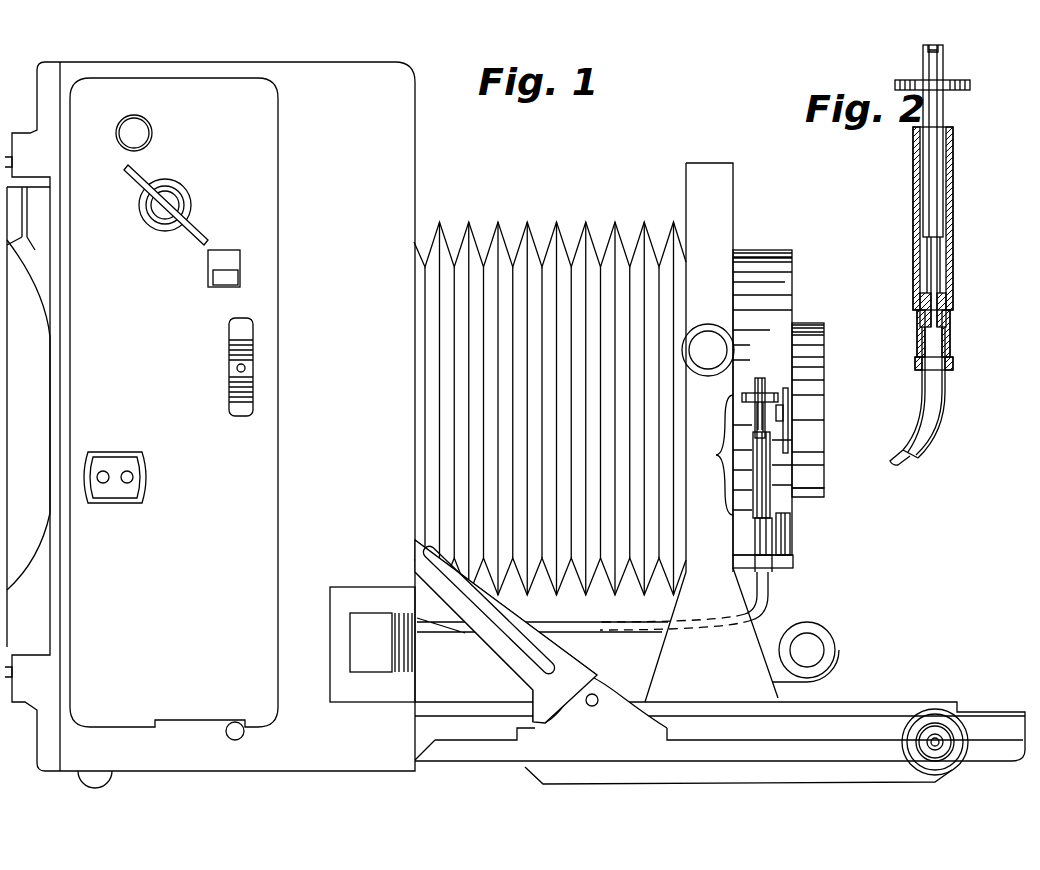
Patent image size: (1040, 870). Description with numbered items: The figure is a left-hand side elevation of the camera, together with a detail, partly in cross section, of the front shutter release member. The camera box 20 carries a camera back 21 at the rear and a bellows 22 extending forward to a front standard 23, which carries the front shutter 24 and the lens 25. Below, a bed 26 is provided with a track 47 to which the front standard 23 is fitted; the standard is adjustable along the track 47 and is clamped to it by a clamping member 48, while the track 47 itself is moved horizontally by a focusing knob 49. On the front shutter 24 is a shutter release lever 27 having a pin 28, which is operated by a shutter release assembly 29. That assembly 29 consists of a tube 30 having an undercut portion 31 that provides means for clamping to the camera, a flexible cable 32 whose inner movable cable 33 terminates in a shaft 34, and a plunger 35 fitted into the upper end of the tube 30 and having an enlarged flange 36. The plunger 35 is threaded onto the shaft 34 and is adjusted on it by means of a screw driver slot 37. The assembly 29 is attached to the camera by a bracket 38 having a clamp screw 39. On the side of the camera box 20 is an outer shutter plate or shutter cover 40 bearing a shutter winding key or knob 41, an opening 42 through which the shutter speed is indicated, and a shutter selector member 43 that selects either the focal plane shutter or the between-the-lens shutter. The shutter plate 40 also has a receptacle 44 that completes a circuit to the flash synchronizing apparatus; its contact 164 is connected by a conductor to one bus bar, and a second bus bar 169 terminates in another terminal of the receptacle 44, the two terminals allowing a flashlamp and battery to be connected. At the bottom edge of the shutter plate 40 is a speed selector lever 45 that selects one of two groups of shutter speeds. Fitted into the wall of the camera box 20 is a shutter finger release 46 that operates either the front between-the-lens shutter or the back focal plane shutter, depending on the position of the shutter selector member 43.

In FIG. 1, the camera box 20 is at (415, 175).
In FIG. 1, the camera back 21 is at (35, 130).
In FIG. 1, the bellows 22 is at (562, 232).
In FIG. 1, the front standard 23 is at (710, 165).
In FIG. 1, the front shutter 24 is at (765, 250).
In FIG. 1, the lens 25 is at (815, 455).
In FIG. 1, the bed 26 is at (870, 740).
In FIG. 1, the shutter release lever 27 is at (788, 412).
In FIG. 1, the pin 28 is at (783, 430).
In FIG. 1, the shutter release assembly 29 is at (714, 455).
In FIG. 1, the tube 30 is at (772, 505).
In FIG. 2, the tube 30 is at (953, 225).
In FIG. 2, the undercut portion 31 is at (950, 350).
In FIG. 1, the flexible cable 32 is at (765, 600).
In FIG. 2, the flexible cable 32 is at (940, 410).
In FIG. 2, the inner movable cable 33 is at (912, 460).
In FIG. 2, the shaft 34 is at (950, 275).
In FIG. 1, the plunger 35 is at (759, 425).
In FIG. 2, the plunger 35 is at (943, 110).
In FIG. 1, the enlarged flange 36 is at (770, 393).
In FIG. 2, the enlarged flange 36 is at (970, 85).
In FIG. 1, the screw driver slot 37 is at (757, 378).
In FIG. 2, the screw driver slot 37 is at (933, 50).
In FIG. 1, the bracket 38 is at (745, 540).
In FIG. 1, the clamp screw 39 is at (790, 545).
In FIG. 1, the outer shutter plate 40 is at (262, 510).
In FIG. 1, the shutter winding key 41 is at (165, 205).
In FIG. 1, the opening 42 is at (208, 258).
In FIG. 1, the shutter selector member 43 is at (253, 353).
In FIG. 1, the receptacle 44 is at (120, 503).
In FIG. 1, the speed selector lever 45 is at (228, 725).
In FIG. 1, the shutter finger release 46 is at (370, 672).
In FIG. 1, the track 47 is at (950, 705).
In FIG. 1, the clamping member 48 is at (835, 640).
In FIG. 1, the focusing knob 49 is at (952, 770).
In FIG. 1, the contact 164 is at (105, 471).
In FIG. 1, the bus bar 169 is at (133, 477).